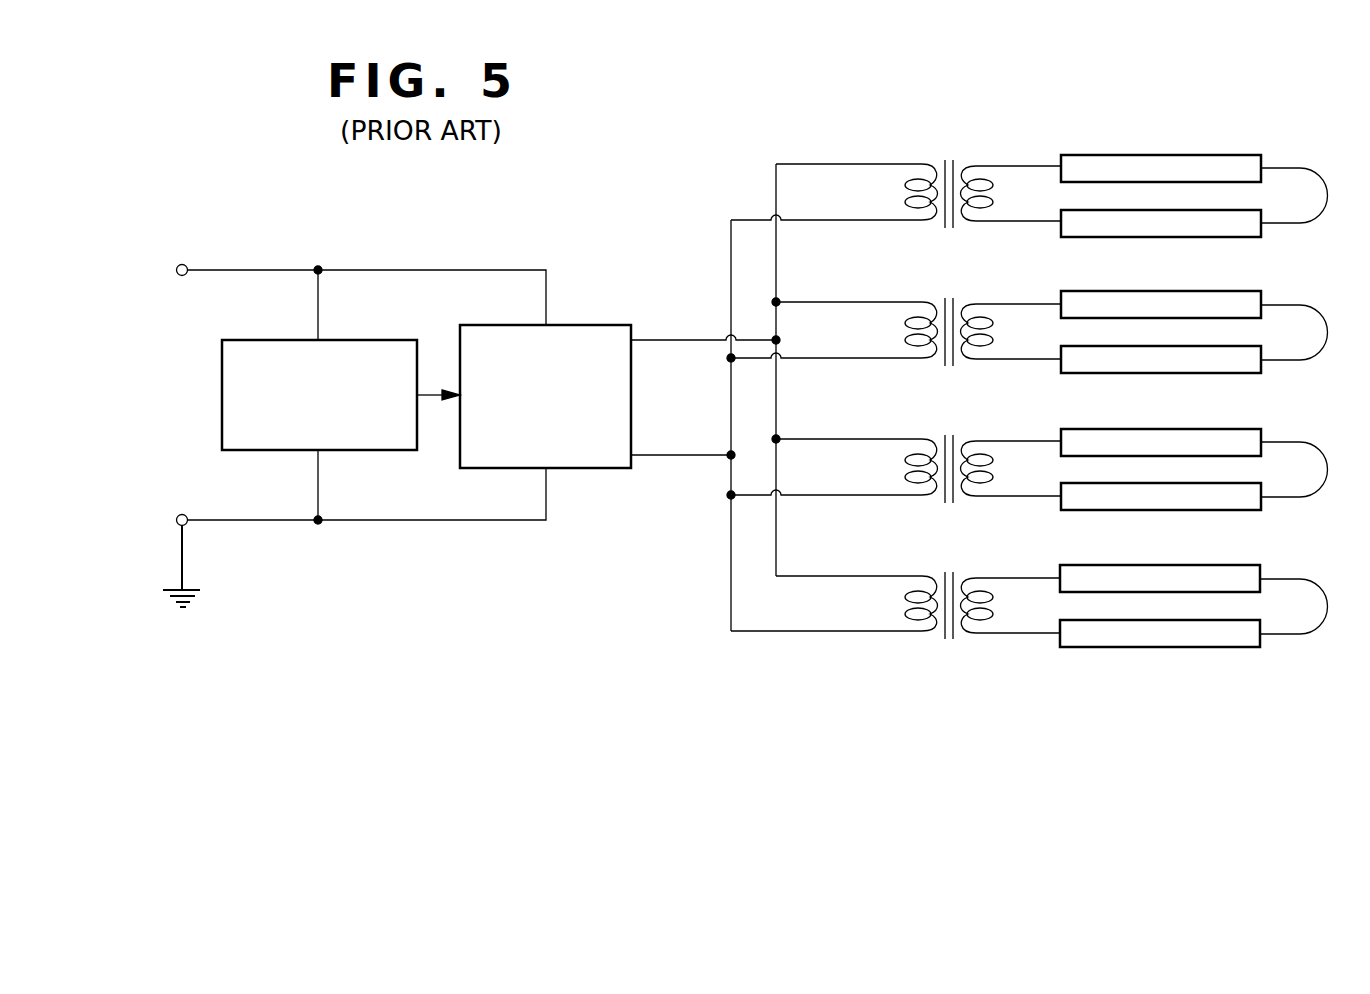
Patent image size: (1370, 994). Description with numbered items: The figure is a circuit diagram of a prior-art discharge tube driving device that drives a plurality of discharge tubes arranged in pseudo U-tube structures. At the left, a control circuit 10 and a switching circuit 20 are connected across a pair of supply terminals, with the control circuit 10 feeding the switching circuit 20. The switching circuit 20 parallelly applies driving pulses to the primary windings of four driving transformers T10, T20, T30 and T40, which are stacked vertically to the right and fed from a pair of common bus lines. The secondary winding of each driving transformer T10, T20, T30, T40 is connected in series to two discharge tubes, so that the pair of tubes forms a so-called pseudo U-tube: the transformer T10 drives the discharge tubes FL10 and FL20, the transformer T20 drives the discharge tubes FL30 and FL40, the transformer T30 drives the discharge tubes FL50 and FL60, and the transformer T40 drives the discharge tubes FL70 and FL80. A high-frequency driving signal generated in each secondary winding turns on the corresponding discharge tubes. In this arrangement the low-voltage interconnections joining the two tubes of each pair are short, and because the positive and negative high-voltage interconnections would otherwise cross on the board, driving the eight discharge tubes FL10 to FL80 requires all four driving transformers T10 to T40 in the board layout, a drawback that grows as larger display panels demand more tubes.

The control circuit 10 is at (340, 340).
The switching circuit 20 is at (572, 325).
The driving transformer T10 is at (896, 179).
The driving transformer T20 is at (896, 317).
The driving transformer T30 is at (896, 454).
The driving transformer T40 is at (896, 590).
The discharge tube FL10 is at (1143, 155).
The discharge tube FL20 is at (1105, 237).
The discharge tube FL30 is at (1208, 291).
The discharge tube FL40 is at (1105, 373).
The discharge tube FL50 is at (1208, 429).
The discharge tube FL60 is at (1105, 510).
The discharge tube FL70 is at (1208, 565).
The discharge tube FL80 is at (1105, 647).